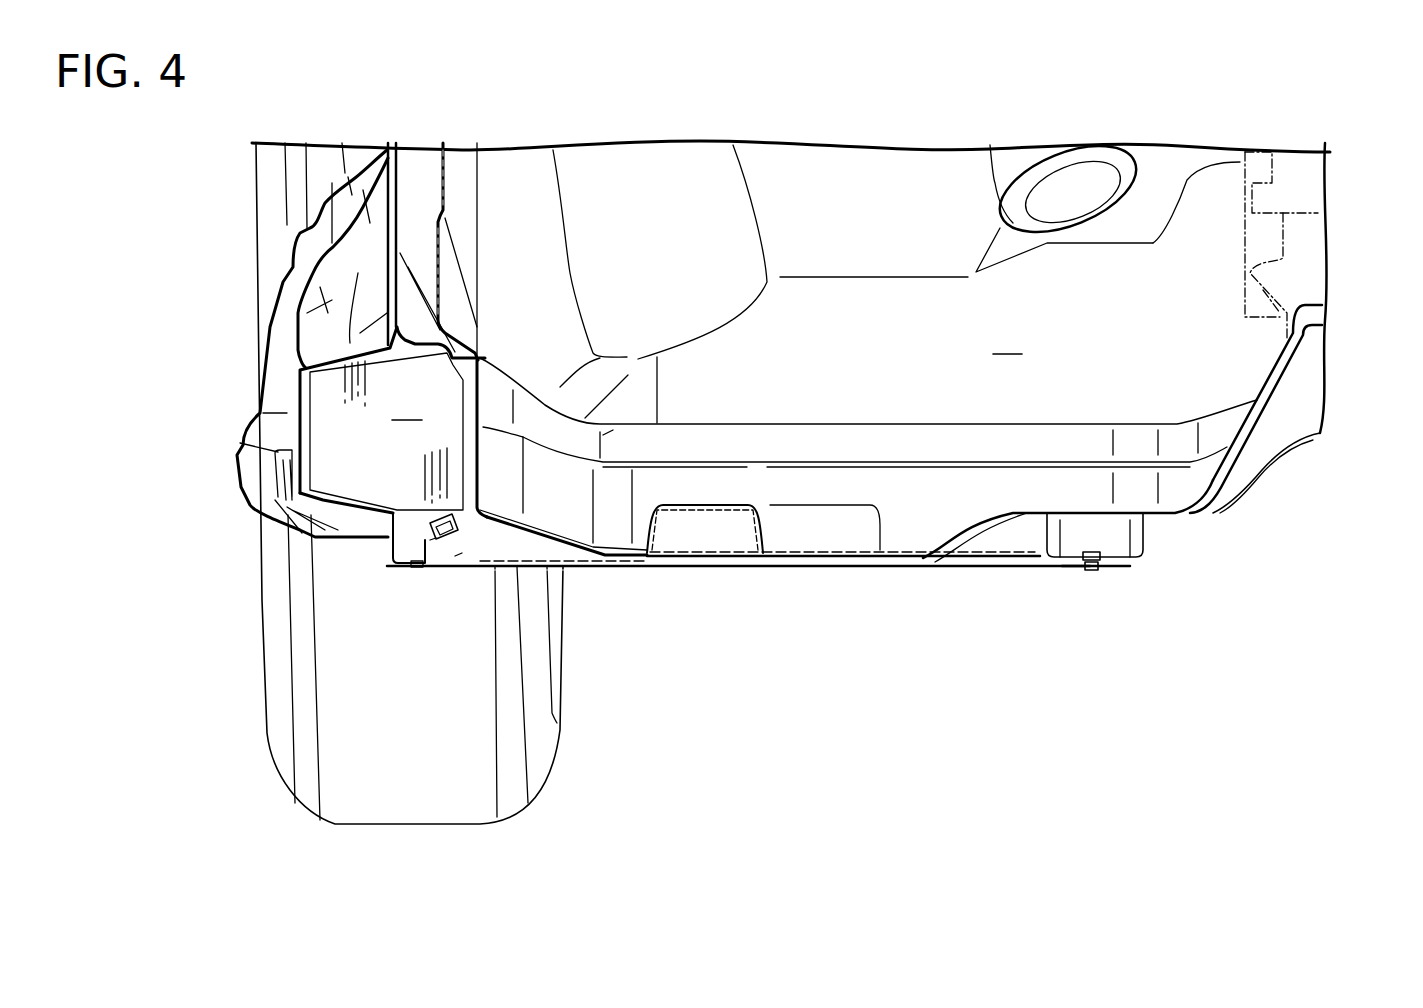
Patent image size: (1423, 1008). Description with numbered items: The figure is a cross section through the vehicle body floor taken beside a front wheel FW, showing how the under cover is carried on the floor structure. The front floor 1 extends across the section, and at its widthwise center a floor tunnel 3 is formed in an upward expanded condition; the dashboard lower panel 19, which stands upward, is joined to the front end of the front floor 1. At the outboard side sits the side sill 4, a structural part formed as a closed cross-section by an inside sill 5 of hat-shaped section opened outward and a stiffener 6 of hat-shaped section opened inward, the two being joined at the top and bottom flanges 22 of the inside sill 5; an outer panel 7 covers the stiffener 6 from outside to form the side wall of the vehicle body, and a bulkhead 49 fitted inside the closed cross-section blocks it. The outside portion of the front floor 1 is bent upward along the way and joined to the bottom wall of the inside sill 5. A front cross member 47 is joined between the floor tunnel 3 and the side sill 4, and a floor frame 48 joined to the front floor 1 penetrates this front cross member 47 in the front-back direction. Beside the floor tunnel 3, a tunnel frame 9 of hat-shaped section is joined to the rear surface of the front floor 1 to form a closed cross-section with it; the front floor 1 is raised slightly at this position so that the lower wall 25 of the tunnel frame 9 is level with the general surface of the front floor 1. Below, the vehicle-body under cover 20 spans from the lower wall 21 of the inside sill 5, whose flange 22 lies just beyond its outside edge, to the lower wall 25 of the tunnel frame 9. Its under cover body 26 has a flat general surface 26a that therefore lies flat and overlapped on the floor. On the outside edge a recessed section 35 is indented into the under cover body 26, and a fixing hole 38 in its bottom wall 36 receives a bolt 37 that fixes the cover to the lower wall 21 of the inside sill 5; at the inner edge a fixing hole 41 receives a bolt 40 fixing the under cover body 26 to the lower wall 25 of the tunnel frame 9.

The front floor 1 is at (1083, 510).
The floor tunnel 3 is at (1270, 385).
The side sill 4 is at (304, 356).
The inside sill 5 is at (478, 438).
The stiffener 6 is at (262, 508).
The outer panel 7 is at (273, 323).
The tunnel frame 9 is at (1133, 537).
The dashboard lower panel 19 is at (1007, 340).
The vehicle-body under cover 20 is at (982, 568).
The lower wall 21 is at (392, 517).
The flange 22 is at (397, 322).
The lower wall 25 is at (1070, 567).
The under cover body 26 is at (843, 612).
The general surface 26a is at (873, 567).
The recessed section 35 is at (458, 553).
The bottom wall 36 is at (432, 540).
The bolt 37 is at (457, 530).
The fixing hole 38 is at (444, 528).
The bolt 40 is at (1095, 572).
The fixing hole 41 is at (1091, 566).
The front cross member 47 is at (843, 423).
The floor frame 48 is at (735, 495).
The bulkhead 49 is at (393, 422).
The front wheel FW is at (268, 735).